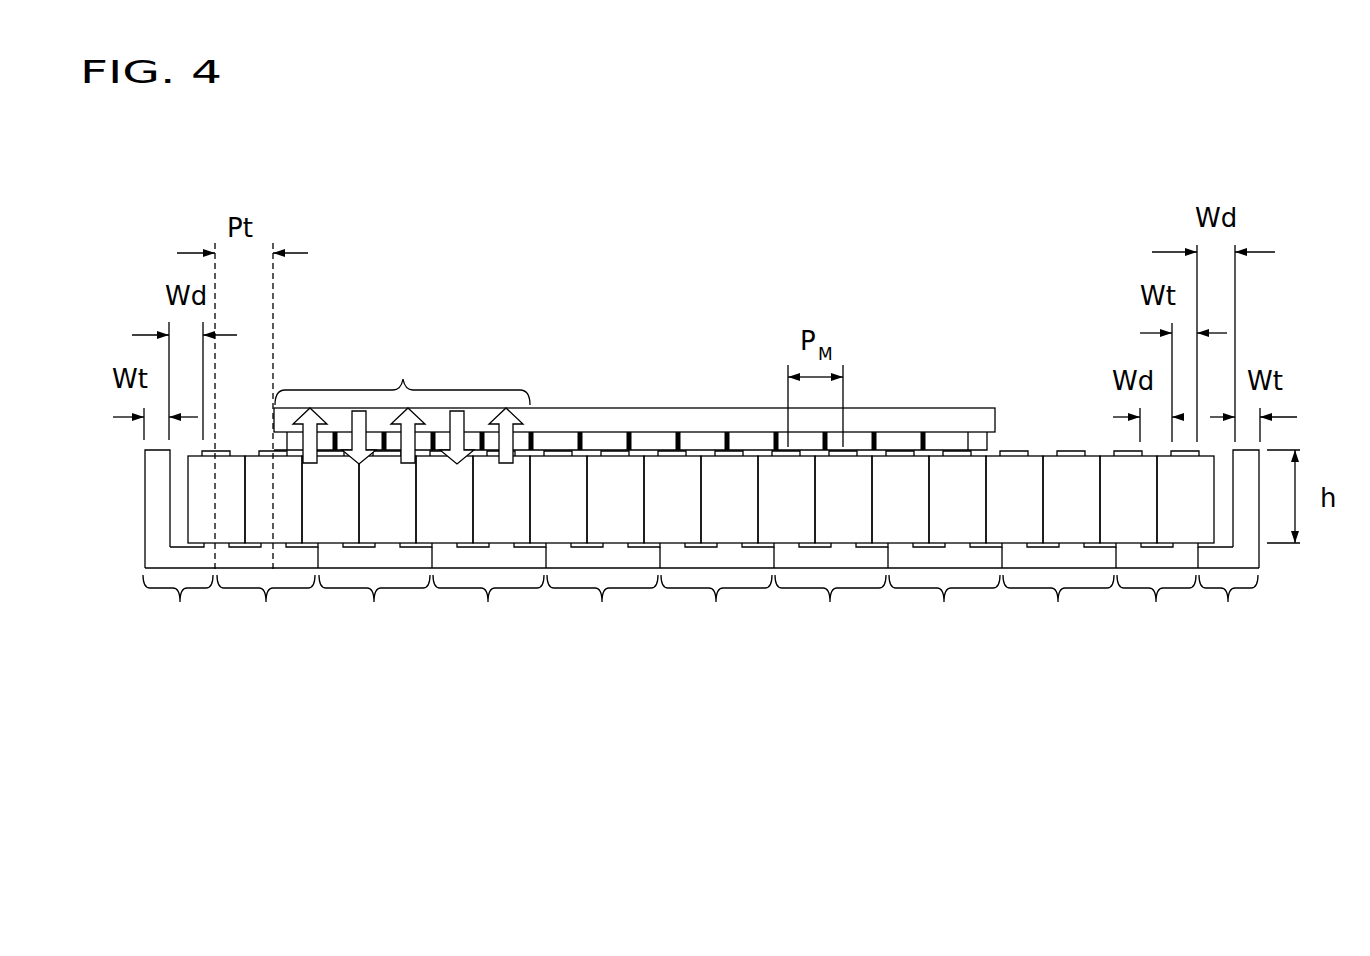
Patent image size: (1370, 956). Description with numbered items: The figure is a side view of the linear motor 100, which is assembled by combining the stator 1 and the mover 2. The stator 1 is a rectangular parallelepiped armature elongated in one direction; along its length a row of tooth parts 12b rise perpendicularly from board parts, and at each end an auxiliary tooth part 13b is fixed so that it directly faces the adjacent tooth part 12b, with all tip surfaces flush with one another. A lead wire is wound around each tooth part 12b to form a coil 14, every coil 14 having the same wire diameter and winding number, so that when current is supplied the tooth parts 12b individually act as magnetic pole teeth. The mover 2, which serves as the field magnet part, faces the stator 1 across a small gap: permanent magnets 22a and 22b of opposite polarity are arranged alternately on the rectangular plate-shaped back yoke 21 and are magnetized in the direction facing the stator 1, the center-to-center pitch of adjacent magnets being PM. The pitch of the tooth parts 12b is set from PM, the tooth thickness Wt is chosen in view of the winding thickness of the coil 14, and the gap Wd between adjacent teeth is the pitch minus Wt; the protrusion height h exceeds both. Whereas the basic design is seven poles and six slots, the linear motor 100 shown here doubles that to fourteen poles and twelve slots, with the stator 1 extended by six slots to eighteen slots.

The linear motor 100 is at (1327, 110).
The stator 1 is at (548, 646).
The mover 2 is at (620, 390).
The back yoke 21 is at (597, 415).
The permanent magnet 22a is at (898, 440).
The permanent magnet 22b is at (955, 437).
The tooth part 12b is at (1172, 444).
The auxiliary tooth part 13b is at (151, 488).
The coil 14 is at (1110, 465).